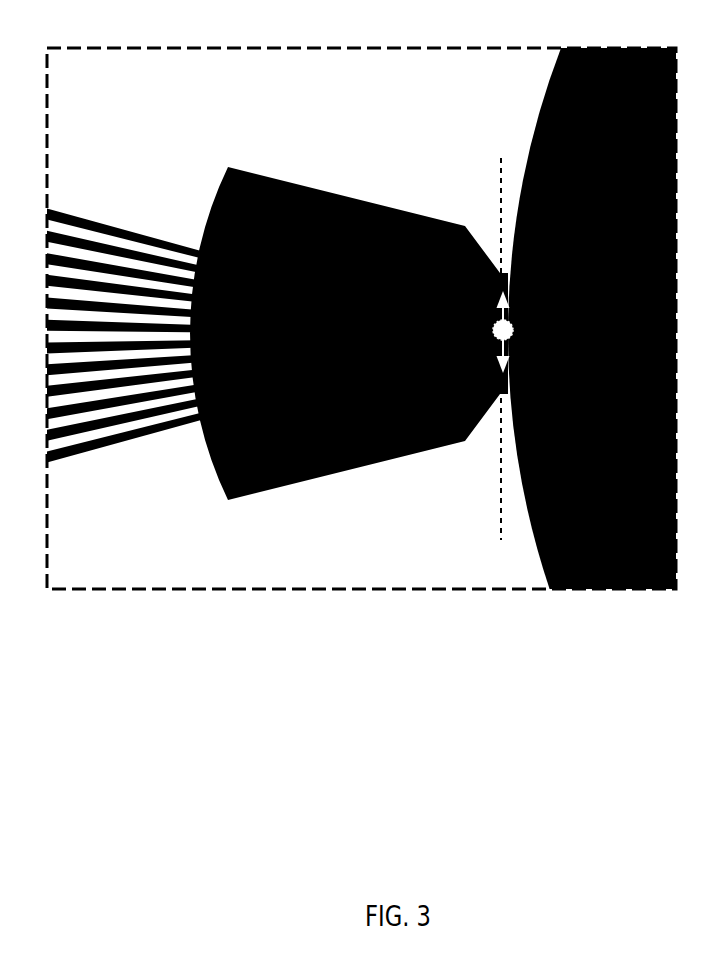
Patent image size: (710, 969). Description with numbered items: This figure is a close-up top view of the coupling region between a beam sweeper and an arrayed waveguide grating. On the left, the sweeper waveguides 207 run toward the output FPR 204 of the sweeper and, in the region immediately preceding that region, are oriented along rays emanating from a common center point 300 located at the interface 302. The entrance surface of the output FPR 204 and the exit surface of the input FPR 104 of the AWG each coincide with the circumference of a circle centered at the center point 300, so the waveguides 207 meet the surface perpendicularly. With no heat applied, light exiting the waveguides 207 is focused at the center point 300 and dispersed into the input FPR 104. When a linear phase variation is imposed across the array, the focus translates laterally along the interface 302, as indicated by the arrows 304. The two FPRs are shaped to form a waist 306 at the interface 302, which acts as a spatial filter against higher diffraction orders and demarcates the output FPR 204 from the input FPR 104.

The input FPR of the AWG 104 is at (525, 127).
The output FPR of the sweeper 204 is at (351, 191).
The sweeper waveguides 207 is at (101, 250).
The center point 300 is at (492, 332).
The interface 302 is at (493, 170).
The arrows 304 is at (502, 300).
The waist 306 is at (487, 234).